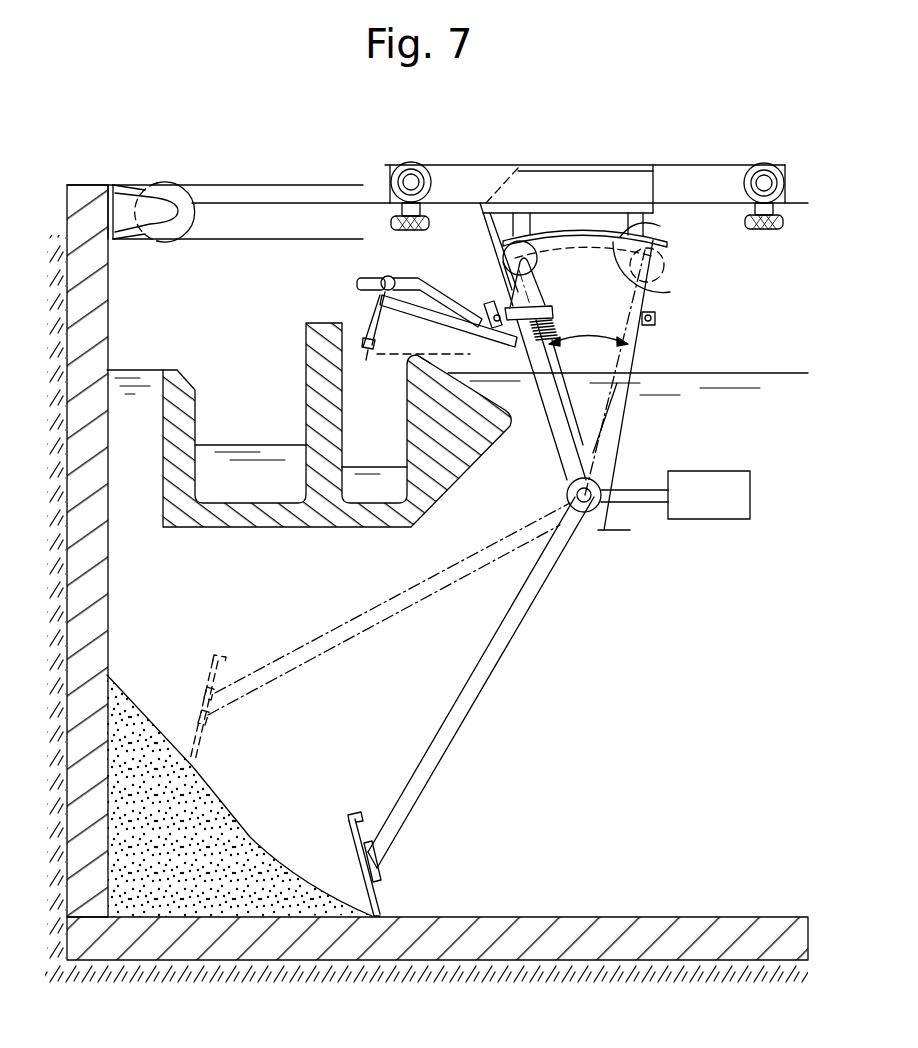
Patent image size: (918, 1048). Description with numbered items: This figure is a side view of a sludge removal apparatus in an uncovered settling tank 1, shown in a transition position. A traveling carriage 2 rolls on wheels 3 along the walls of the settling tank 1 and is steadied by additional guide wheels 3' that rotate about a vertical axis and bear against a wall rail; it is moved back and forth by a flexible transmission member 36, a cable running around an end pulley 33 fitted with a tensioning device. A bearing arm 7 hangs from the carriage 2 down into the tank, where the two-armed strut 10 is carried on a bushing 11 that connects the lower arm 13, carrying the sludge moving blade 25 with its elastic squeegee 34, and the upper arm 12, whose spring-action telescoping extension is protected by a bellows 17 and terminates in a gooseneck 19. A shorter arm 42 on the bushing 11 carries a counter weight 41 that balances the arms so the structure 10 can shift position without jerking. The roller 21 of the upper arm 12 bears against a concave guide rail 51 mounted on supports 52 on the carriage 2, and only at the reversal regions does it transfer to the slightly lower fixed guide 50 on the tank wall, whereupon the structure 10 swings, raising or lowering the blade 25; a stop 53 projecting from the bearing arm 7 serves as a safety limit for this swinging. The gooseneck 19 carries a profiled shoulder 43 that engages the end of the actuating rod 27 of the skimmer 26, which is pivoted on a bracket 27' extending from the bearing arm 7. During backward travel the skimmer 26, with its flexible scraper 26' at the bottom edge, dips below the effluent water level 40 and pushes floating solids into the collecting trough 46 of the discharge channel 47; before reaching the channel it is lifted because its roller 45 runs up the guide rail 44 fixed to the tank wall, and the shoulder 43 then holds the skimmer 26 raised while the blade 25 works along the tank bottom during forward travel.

The settling tank 1 is at (168, 650).
The traveling carriage 2 is at (673, 180).
The wheels 3 is at (387, 172).
The guide wheels 3' is at (383, 218).
The bearing arm 7 is at (617, 358).
The two-armed strut 10 is at (579, 540).
The bushing 11 is at (569, 494).
The upper arm 12 is at (536, 352).
The lower arm 13 is at (461, 722).
The bellows 17 is at (553, 320).
The gooseneck 19 is at (535, 284).
The roller 21 is at (508, 258).
The sludge moving blade 25 is at (350, 838).
The skimmer 26 is at (348, 317).
The flexible scraper 26' is at (412, 366).
The actuating rod 27 is at (448, 322).
The bracket 27' is at (478, 298).
The end pulley 33 is at (162, 190).
The elastic squeegee 34 is at (380, 904).
The flexible transmission member 36 is at (228, 185).
The effluent water level 40 is at (735, 347).
The counter weight 41 is at (712, 520).
The shorter arm 42 is at (632, 503).
The profiled shoulder 43 is at (505, 271).
The guide rail 44 is at (405, 281).
The roller 45 is at (380, 277).
The collecting trough 46 is at (386, 445).
The discharge channel 47 is at (235, 517).
The fixed guide 50 is at (648, 293).
The guide rail 51 is at (662, 225).
The supports 52 is at (662, 238).
The stop 53 is at (658, 320).